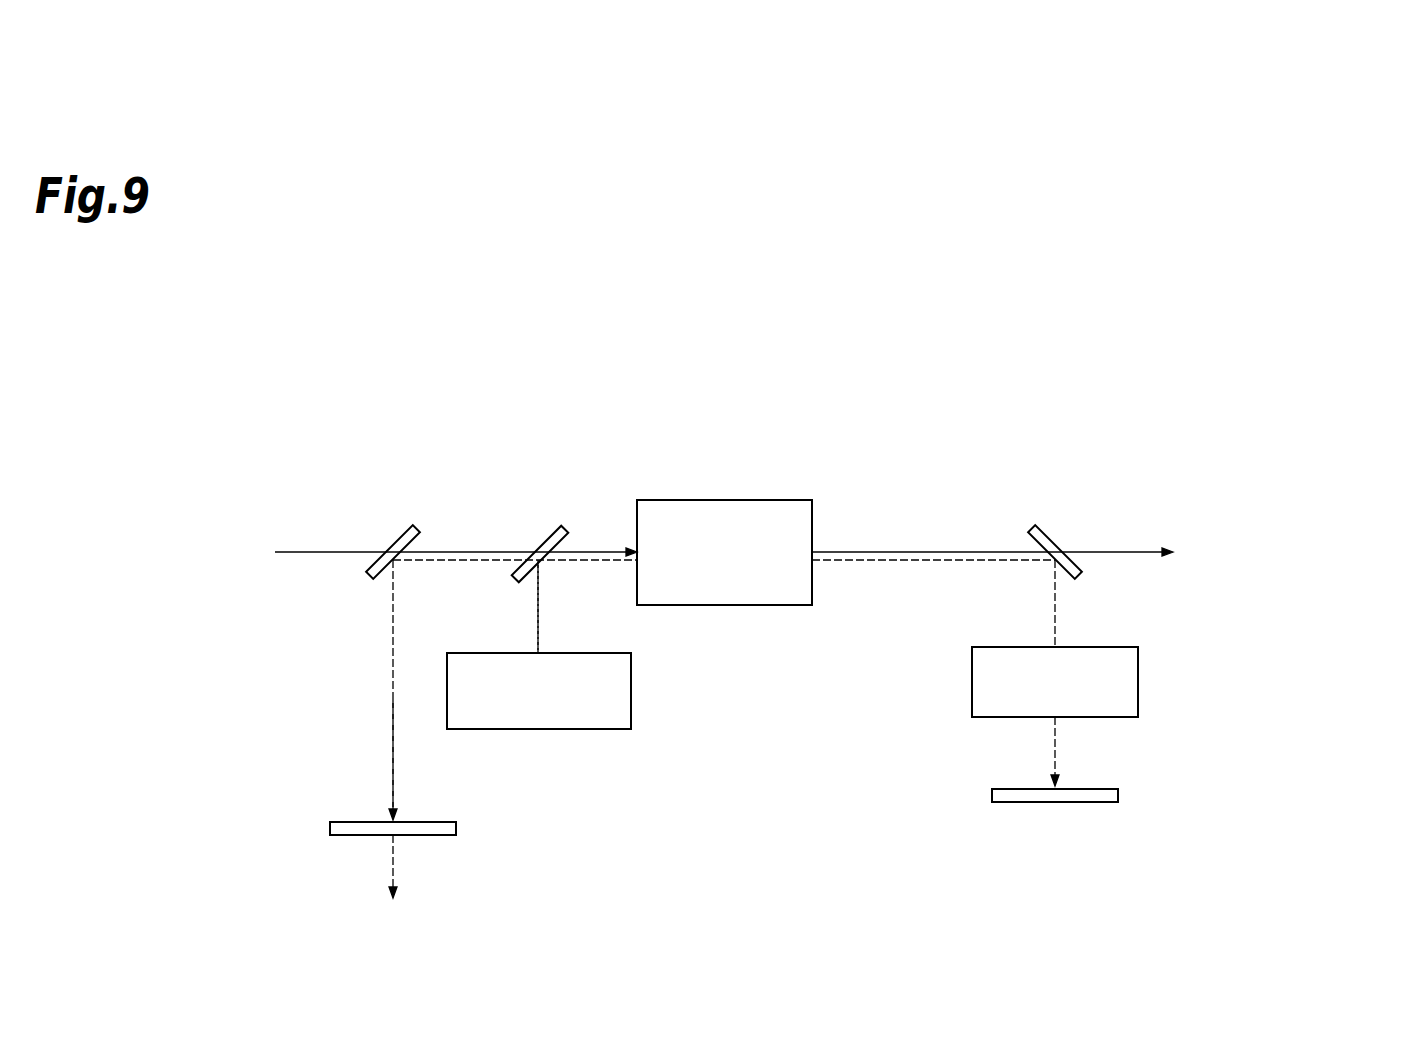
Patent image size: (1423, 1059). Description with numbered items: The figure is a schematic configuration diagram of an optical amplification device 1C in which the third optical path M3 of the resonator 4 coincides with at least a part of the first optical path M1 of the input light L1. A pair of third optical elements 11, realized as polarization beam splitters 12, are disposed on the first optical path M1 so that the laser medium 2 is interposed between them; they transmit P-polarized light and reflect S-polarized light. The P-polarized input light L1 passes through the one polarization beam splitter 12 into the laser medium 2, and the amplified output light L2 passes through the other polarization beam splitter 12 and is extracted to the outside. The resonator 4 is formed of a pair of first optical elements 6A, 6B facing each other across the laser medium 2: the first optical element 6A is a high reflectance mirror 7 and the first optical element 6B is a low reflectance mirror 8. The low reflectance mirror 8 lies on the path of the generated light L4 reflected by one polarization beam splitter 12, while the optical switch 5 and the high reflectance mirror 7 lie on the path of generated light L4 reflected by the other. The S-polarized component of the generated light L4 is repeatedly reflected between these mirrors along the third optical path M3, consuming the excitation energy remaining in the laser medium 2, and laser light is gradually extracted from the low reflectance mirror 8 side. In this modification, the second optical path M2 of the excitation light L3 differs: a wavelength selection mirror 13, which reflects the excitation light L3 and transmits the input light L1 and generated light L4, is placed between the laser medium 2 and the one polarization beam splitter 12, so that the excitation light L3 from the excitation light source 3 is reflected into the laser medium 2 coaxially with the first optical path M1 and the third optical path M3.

The optical amplification device 1C is at (248, 388).
The laser medium 2 is at (725, 500).
The excitation light source 3 is at (540, 730).
The resonator 4 is at (324, 848).
The optical switch 5 is at (1138, 680).
The first optical element 6A is at (1075, 802).
The first optical element 6B is at (430, 835).
The high reflectance mirror 7 is at (1055, 836).
The low reflectance mirror 8 is at (440, 866).
The third optical element 11 is at (406, 528).
The polarization beam splitter 12 is at (718, 516).
The wavelength selection mirror 13 is at (552, 529).
The input light L1 is at (478, 548).
The output light L2 is at (1112, 550).
The excitation light L3 is at (538, 625).
The generated light L4 is at (393, 755).
The first optical path M1 is at (317, 538).
The second optical path M2 is at (550, 612).
The third optical path M3 is at (378, 660).